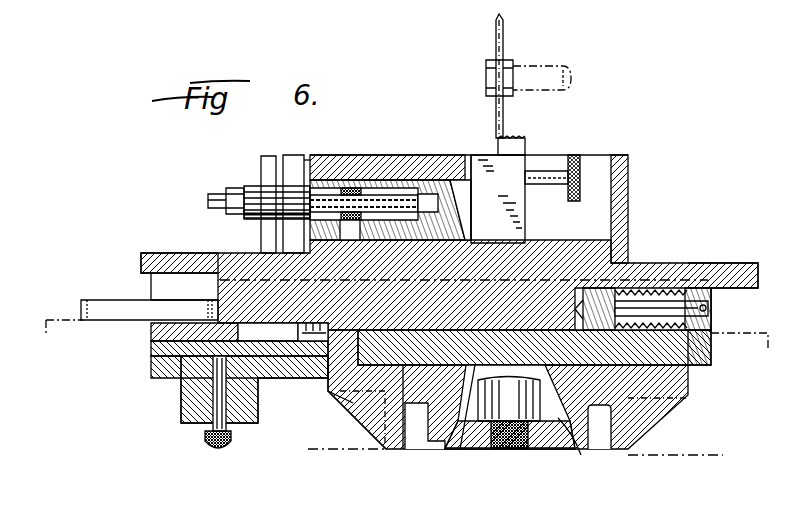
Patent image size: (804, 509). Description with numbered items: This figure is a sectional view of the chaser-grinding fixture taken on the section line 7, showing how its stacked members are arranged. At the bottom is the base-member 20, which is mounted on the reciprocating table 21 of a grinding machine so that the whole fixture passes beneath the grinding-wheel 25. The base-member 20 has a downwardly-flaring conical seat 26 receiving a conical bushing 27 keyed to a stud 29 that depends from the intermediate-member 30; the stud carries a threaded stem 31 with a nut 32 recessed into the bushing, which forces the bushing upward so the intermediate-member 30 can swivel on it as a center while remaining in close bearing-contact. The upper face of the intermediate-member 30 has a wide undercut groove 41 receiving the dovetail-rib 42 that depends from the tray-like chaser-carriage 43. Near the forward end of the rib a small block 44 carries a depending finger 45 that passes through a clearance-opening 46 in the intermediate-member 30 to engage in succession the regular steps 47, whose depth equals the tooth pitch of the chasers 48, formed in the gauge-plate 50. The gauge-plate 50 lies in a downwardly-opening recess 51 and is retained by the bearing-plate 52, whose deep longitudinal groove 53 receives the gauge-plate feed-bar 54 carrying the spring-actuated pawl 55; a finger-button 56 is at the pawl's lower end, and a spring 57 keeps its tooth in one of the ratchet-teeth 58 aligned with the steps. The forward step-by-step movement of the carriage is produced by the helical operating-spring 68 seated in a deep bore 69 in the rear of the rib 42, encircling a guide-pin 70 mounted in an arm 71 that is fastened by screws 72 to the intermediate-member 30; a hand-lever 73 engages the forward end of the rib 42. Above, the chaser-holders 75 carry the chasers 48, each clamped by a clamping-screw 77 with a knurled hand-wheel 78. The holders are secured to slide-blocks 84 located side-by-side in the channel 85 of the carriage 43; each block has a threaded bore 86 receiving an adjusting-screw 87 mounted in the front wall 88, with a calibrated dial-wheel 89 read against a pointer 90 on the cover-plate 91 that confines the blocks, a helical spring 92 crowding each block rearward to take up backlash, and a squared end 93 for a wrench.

The section line 7- 7 is at (404, 348).
The base-member 20 is at (600, 387).
The reciprocating table 21 is at (520, 457).
The grinding-wheel 25 is at (488, 24).
The conical seat 26 is at (463, 408).
The conical bushing 27 is at (438, 442).
The stud 29 is at (553, 400).
The intermediate-member 30 is at (395, 441).
The threaded stem 31 is at (490, 441).
The nut 32 is at (471, 442).
The undercut groove 41 is at (160, 283).
The dovetail-rib 42 is at (524, 287).
The chaser-carriage 43 is at (160, 245).
The block 44 is at (315, 333).
The finger 45 is at (307, 349).
The clearance-opening 46 is at (350, 380).
The steps 47 is at (287, 349).
The chasers 48 is at (512, 135).
The gauge-plate 50 is at (145, 341).
The recess 51 is at (150, 323).
The bearing-plate 52 is at (174, 377).
The longitudinal groove 53 is at (197, 380).
The gauge-plate feed-bar 54 is at (234, 414).
The pawl 55 is at (150, 358).
The finger-button 56 is at (207, 441).
The spring 57 is at (210, 392).
The ratchet-teeth 58 is at (205, 350).
The helical operating-spring 68 is at (630, 290).
The bore 69 is at (656, 293).
The guide-pin 70 is at (648, 296).
The arm 71 is at (704, 312).
The screws 72 is at (688, 357).
The hand-lever 73 is at (86, 292).
The chaser-holders 75 is at (518, 213).
The clamping-screw 77 is at (535, 177).
The knurled hand-wheel 78 is at (571, 188).
The slide-blocks 84 is at (458, 192).
The channel 85 is at (300, 215).
The threaded bore 86 is at (428, 147).
The adjusting-screw 87 is at (310, 187).
The front wall 88 is at (320, 181).
The calibrated dial-wheel 89 is at (262, 148).
The pointer 90 is at (290, 147).
The cover-plate 91 is at (380, 147).
The helical spring 92 is at (345, 181).
The squared end 93 is at (226, 180).